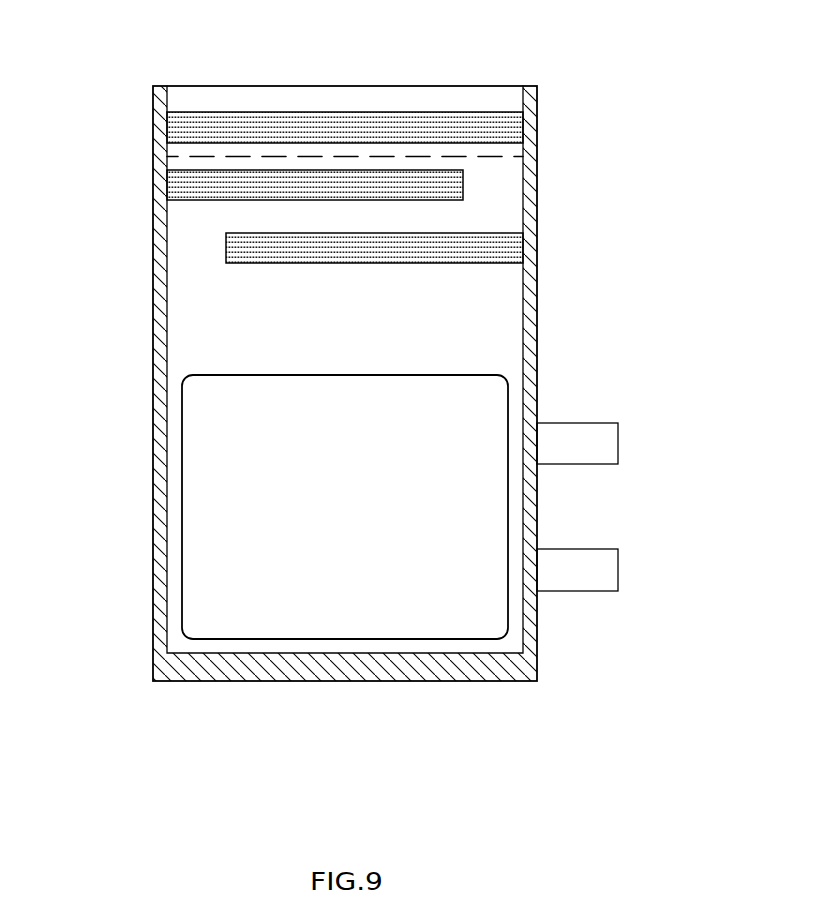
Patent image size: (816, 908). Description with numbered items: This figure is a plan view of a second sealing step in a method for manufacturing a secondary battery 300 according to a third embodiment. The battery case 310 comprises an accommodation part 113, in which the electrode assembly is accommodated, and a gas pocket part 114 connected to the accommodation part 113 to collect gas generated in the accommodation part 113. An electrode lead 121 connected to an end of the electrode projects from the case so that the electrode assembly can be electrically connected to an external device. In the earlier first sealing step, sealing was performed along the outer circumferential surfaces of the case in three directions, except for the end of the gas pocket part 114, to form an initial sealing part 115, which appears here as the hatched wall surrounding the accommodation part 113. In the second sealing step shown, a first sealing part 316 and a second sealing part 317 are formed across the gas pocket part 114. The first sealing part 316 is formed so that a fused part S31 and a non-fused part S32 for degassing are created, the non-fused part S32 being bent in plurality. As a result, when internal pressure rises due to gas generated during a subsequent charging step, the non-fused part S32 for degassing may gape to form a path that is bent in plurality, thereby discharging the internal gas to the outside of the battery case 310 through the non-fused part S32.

The secondary battery 300 is at (686, 40).
The battery case 310 is at (150, 92).
The second sealing part 317 is at (502, 127).
The first sealing part 316 is at (448, 185).
The fused part S31 is at (212, 202).
The non-fused part for degassing S32 is at (197, 244).
The gas pocket part 114 is at (200, 311).
The initial sealing part 115 is at (183, 672).
The accommodation part 113 is at (345, 617).
The electrode lead 121 is at (582, 582).